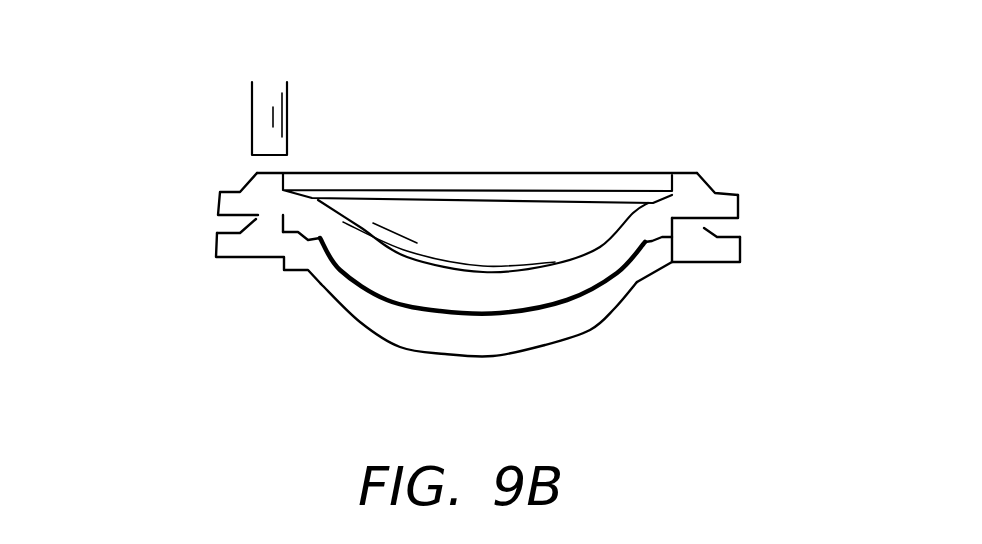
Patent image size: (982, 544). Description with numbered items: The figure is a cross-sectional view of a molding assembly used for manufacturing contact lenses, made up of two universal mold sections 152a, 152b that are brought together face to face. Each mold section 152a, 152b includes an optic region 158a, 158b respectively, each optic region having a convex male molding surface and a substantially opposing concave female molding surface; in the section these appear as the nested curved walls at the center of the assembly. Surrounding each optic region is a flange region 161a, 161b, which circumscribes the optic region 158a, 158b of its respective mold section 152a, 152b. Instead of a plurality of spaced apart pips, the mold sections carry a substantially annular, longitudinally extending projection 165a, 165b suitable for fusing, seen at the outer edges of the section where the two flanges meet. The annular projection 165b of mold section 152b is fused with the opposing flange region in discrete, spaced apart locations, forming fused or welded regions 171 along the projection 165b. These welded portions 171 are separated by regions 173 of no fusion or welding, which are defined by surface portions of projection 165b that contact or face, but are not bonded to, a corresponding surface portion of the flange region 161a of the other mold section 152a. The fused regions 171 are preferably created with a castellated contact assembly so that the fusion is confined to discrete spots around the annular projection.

The mold section 152a is at (447, 265).
The mold section 152b is at (513, 358).
The optic region 158a is at (392, 278).
The optic region 158b is at (462, 333).
The flange region 161a is at (703, 200).
The flange region 161b is at (692, 243).
The annular projection 165a is at (700, 174).
The annular projection 165b is at (255, 222).
The fused region 171 is at (272, 220).
The region of no fusion 173 is at (677, 262).